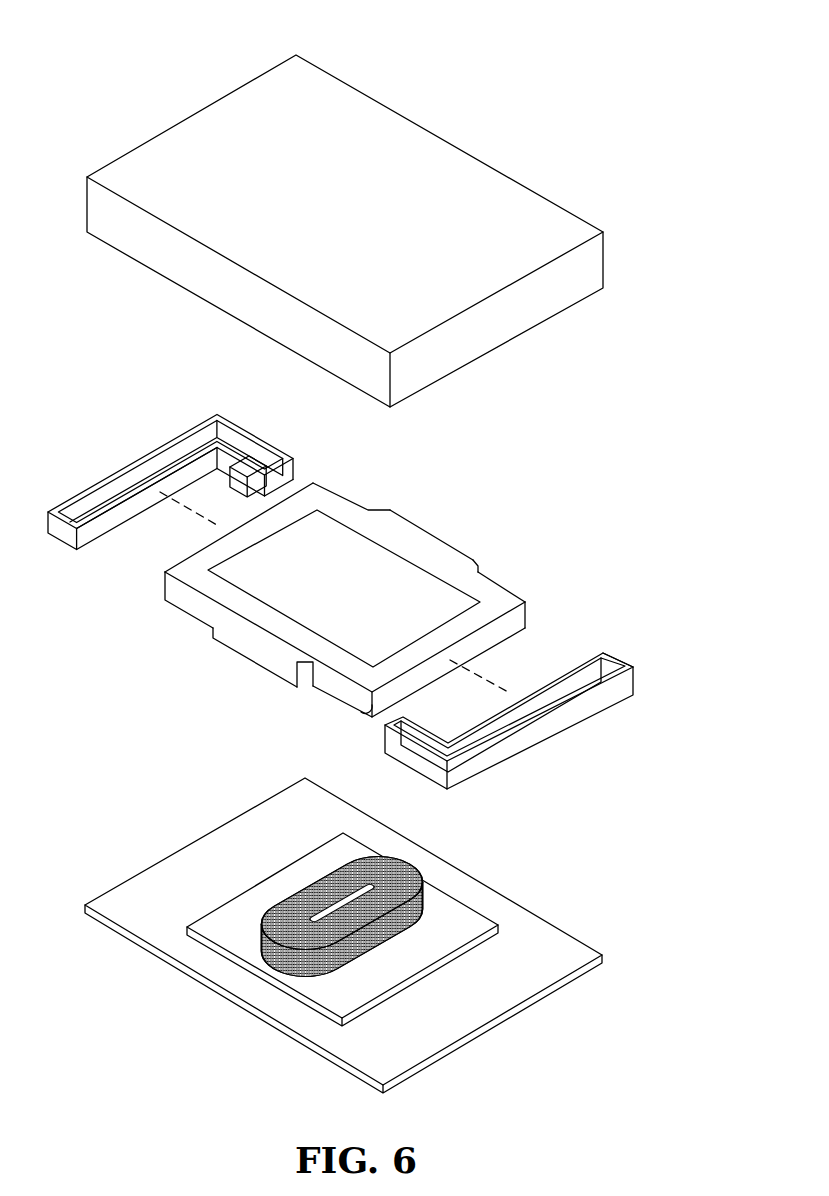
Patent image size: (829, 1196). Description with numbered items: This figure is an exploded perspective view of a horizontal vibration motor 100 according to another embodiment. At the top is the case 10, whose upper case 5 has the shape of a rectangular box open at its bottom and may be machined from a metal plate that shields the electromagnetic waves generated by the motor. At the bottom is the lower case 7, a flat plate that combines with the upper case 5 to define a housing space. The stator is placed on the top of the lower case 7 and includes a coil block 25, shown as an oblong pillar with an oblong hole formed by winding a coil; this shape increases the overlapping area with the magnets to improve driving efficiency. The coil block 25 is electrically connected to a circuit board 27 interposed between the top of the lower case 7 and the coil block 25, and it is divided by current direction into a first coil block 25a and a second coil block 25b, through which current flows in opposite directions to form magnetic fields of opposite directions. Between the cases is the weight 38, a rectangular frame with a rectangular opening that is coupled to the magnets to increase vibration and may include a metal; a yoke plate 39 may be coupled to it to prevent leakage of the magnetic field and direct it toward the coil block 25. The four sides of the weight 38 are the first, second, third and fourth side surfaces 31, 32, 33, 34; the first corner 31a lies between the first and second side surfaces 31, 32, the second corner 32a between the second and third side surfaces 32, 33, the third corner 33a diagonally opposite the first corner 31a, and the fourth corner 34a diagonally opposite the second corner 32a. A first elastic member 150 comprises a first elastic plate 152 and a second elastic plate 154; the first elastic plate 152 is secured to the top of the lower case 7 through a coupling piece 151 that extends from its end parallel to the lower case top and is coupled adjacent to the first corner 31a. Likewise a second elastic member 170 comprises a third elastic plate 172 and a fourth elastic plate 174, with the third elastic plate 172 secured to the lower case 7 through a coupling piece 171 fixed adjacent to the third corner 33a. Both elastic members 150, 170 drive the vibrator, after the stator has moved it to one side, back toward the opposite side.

The case 10 is at (170, 88).
The horizontal vibration motor 100 is at (500, 156).
The upper case 5 is at (542, 209).
The first elastic member 150 is at (124, 448).
The coupling piece 151 is at (252, 484).
The first elastic plate 152 is at (88, 493).
The second elastic plate 154 is at (104, 523).
The first side surface 31 is at (347, 496).
The first corner 31a is at (313, 480).
The weight 38 is at (412, 536).
The yoke plate 39 is at (418, 574).
The fourth corner 34a is at (532, 612).
The second corner 32a is at (165, 588).
The second side surface 32 is at (187, 600).
The third side surface 33 is at (335, 690).
The third corner 33a is at (370, 710).
The fourth side surface 34 is at (417, 686).
The second elastic member 170 is at (612, 720).
The coupling piece 171 is at (404, 770).
The third elastic plate 172 is at (566, 720).
The fourth elastic plate 174 is at (586, 668).
The coil block 25 is at (417, 864).
The first coil block 25a is at (325, 878).
The second coil block 25b is at (422, 892).
The lower case 7 is at (573, 948).
The circuit board 27 is at (252, 953).